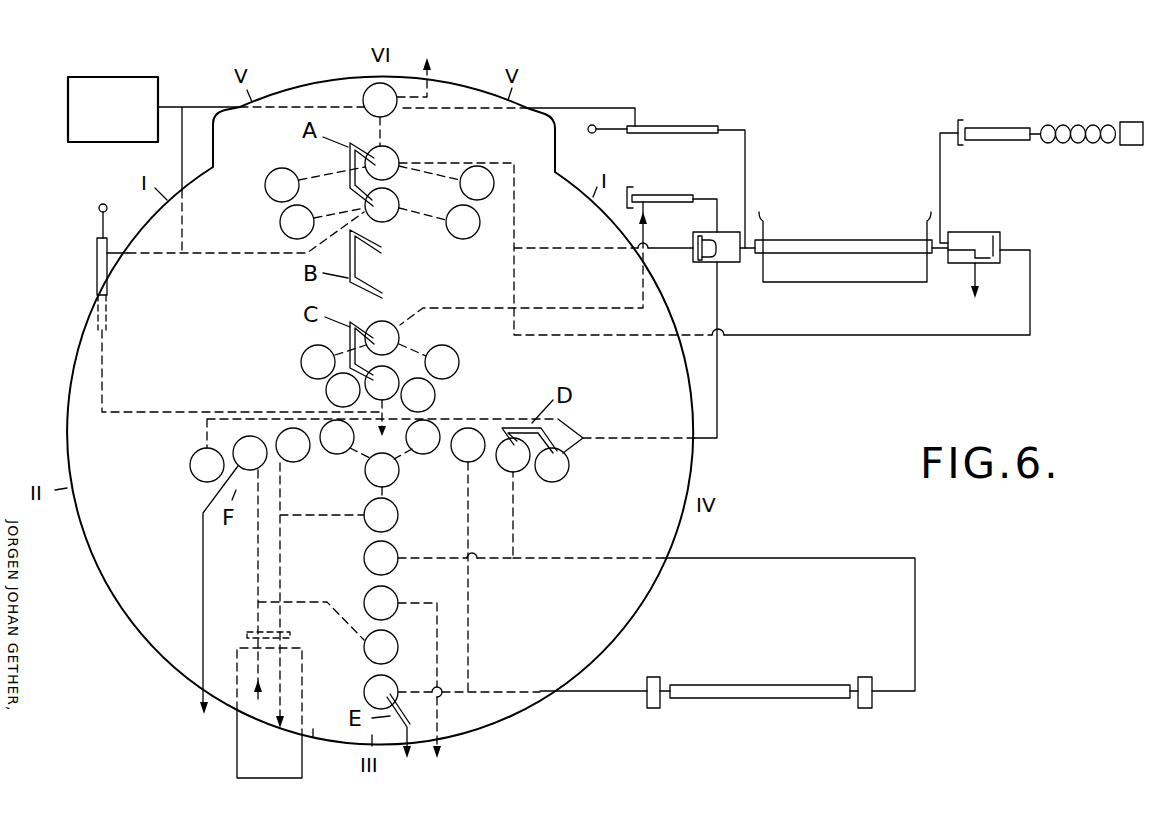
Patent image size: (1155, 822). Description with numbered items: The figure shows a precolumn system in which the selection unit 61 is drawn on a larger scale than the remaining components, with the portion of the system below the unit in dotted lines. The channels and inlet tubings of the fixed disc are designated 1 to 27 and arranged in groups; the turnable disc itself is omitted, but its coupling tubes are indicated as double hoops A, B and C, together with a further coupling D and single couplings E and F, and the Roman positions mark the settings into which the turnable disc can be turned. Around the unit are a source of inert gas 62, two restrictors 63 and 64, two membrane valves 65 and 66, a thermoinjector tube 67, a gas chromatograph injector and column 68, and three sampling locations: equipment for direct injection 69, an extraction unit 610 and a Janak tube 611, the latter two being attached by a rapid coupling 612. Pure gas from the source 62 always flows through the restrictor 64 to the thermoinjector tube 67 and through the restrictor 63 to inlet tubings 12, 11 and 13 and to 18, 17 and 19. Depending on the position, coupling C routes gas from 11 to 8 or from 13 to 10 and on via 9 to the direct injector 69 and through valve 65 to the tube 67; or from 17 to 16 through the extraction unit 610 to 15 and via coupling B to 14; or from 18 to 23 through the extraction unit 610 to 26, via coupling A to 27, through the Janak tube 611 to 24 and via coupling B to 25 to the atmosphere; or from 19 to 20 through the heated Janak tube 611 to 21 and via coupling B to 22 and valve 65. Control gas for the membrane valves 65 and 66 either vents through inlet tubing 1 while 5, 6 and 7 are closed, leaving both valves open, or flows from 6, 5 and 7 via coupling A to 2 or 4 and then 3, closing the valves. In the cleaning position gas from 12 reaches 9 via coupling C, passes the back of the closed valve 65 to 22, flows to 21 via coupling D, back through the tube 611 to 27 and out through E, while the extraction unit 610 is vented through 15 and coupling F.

The selection unit 61 is at (128, 612).
The source of inert gas 62 is at (160, 93).
The restrictor 63 is at (108, 314).
The restrictor 64 is at (667, 125).
The membrane valve 65 is at (705, 263).
The membrane valve 66 is at (983, 232).
The thermoinjector tube 67 is at (787, 240).
The gas chromatograph injector and column 68 is at (1063, 123).
The equipment for direct injection 69 is at (660, 192).
The extraction unit 610 is at (237, 745).
The Janak tube 611 is at (760, 684).
The rapid coupling 612 is at (290, 636).
The inlet tubing 1 is at (380, 100).
The inlet tubing 2 is at (282, 185).
The inlet tubing 3 is at (382, 163).
The inlet tubing 4 is at (477, 183).
The inlet tubing 5 is at (297, 222).
The inlet tubing 6 is at (382, 205).
The inlet tubing 7 is at (463, 222).
The inlet tubing 8 is at (318, 362).
The inlet tubing 9 is at (382, 338).
The inlet tubing 10 is at (442, 362).
The inlet tubing 11 is at (343, 390).
The inlet tubing 12 is at (382, 383).
The inlet tubing 13 is at (418, 395).
The inlet tubing 14 is at (207, 465).
The inlet tubing 15 is at (250, 453).
The inlet tubing 16 is at (293, 445).
The inlet tubing 17 is at (337, 437).
The inlet tubing 18 is at (382, 470).
The inlet tubing 19 is at (423, 437).
The inlet tubing 20 is at (468, 445).
The inlet tubing 21 is at (513, 455).
The inlet tubing 22 is at (552, 465).
The inlet tubing 23 is at (381, 515).
The inlet tubing 24 is at (381, 558).
The inlet tubing 25 is at (381, 603).
The inlet tubing 26 is at (381, 647).
The inlet tubing 27 is at (381, 692).